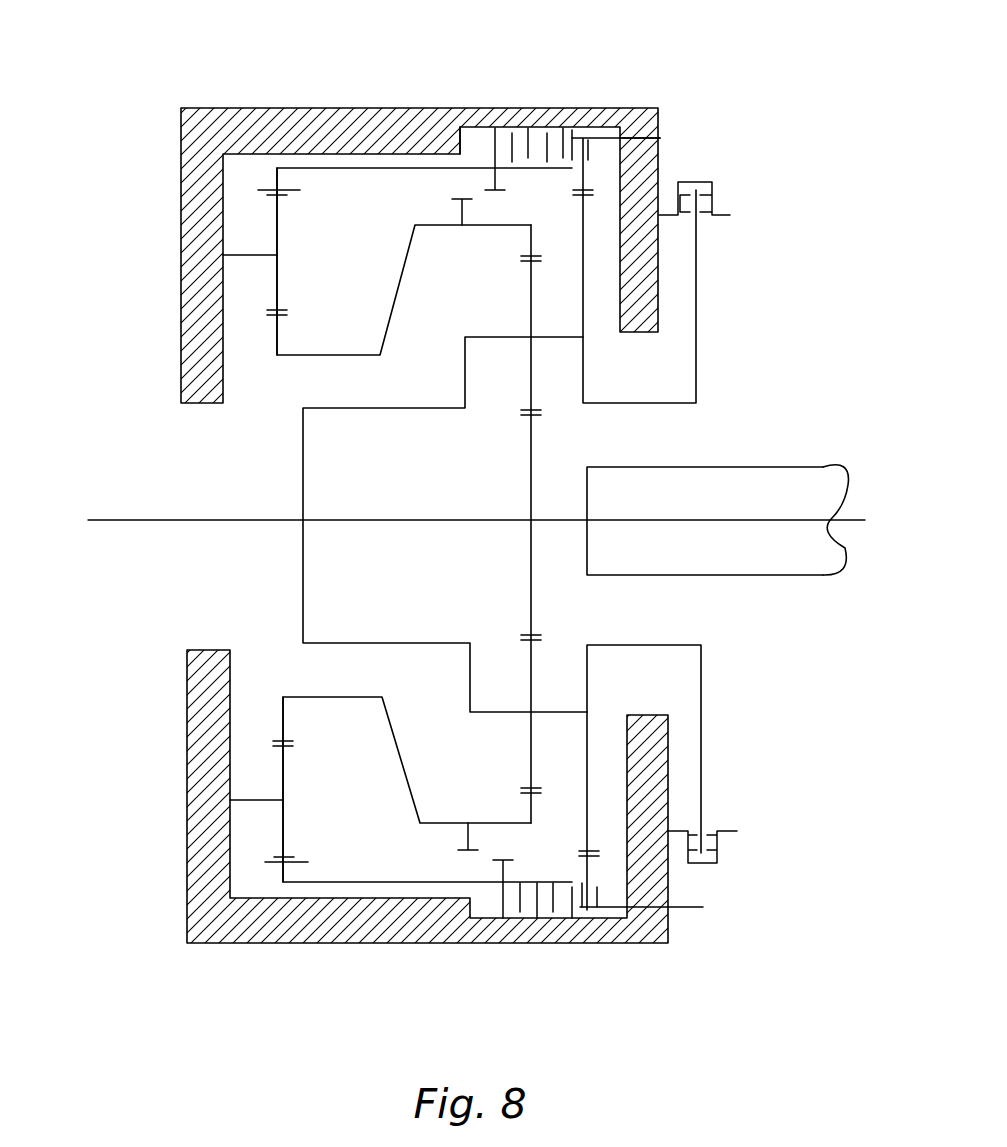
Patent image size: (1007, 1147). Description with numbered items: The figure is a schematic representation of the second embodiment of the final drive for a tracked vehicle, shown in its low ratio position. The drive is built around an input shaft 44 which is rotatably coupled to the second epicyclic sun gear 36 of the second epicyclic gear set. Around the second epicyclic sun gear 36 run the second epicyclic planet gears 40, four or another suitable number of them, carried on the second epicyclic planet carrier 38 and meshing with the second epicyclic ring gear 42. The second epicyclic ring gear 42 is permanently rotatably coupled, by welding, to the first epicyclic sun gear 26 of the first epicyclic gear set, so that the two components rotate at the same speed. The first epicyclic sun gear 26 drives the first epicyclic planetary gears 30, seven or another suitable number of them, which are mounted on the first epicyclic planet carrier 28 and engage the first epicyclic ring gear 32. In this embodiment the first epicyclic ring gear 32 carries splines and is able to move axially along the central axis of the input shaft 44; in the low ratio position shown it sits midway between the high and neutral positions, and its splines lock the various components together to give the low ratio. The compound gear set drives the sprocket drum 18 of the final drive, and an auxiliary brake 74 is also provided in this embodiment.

The sprocket drum 18 is at (105, 520).
The first epicyclic sun gear 26 is at (275, 350).
The first epicyclic planet carrier 28 is at (270, 255).
The first epicyclic planetary gears 30 is at (280, 227).
The first epicyclic ring gear 32 is at (277, 190).
The second epicyclic sun gear 36 is at (530, 492).
The second epicyclic planet carrier 38 is at (492, 336).
The second epicyclic planet gears 40 is at (528, 300).
The second epicyclic ring gear 42 is at (512, 225).
The input shaft 44 is at (718, 477).
The auxiliary brake 74 is at (717, 168).